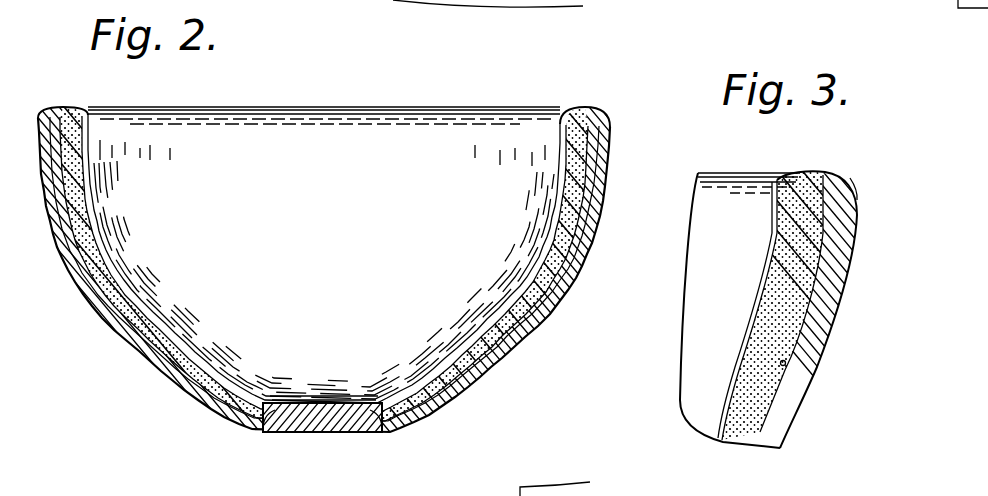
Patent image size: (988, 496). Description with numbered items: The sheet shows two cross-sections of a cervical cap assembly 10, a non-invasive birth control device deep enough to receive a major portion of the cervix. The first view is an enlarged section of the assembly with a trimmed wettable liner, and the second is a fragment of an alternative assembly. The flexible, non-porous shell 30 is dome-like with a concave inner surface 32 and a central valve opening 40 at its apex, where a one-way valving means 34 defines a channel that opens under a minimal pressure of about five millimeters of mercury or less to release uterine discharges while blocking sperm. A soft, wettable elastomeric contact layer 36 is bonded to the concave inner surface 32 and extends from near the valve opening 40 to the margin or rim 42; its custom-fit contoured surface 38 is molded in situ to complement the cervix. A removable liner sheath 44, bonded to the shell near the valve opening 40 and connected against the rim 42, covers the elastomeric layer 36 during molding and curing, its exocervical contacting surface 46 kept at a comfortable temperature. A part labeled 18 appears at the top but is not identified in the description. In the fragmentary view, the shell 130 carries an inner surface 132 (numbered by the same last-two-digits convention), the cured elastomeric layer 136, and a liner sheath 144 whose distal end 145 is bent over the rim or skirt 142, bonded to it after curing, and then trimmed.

In FIG. 2, the cervical cap assembly 10 is at (494, 240).
In FIG. 2, the handle 18 is at (593, 0).
In FIG. 2, the cervical cap or shell 30 is at (128, 342).
In FIG. 2, the concave inner surface 32 is at (538, 288).
In FIG. 2, the one-way valving means 34 is at (317, 427).
In FIG. 2, the elastomeric contact layer 36 is at (562, 244).
In FIG. 2, the custom-fit contoured surface 38 is at (105, 238).
In FIG. 2, the central valve opening 40 is at (287, 432).
In FIG. 2, the margin or rim 42 is at (592, 110).
In FIG. 2, the liner sheath 44 is at (218, 370).
In FIG. 2, the exocervical contacting surface 46 is at (92, 178).
In FIG. 3, the shell 130 is at (828, 313).
In FIG. 3, the granule 132 is at (786, 363).
In FIG. 3, the elastomeric layer 136 is at (806, 270).
In FIG. 3, the rim or skirt 142 is at (822, 175).
In FIG. 3, the liner sheath 144 is at (777, 235).
In FIG. 3, the distal end 145 is at (847, 180).